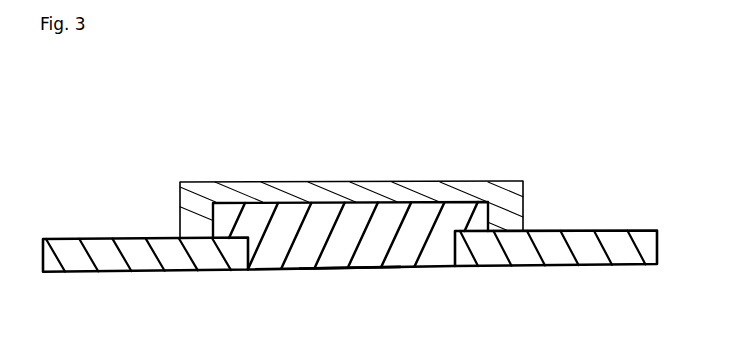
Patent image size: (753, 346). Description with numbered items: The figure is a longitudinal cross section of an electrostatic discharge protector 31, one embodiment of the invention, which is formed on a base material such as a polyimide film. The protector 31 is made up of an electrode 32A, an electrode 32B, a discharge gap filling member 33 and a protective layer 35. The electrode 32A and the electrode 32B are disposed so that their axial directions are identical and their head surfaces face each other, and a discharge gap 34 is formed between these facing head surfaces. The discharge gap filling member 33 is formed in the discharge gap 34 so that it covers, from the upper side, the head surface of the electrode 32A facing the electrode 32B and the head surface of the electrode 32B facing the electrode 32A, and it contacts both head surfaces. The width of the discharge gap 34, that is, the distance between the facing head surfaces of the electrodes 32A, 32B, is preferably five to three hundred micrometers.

The electrostatic discharge protector 31 is at (459, 165).
The electrode 32A is at (100, 248).
The electrode 32B is at (573, 242).
The discharge gap filling member 33 is at (333, 210).
The discharge gap 34 is at (350, 272).
The protective layer 35 is at (215, 192).